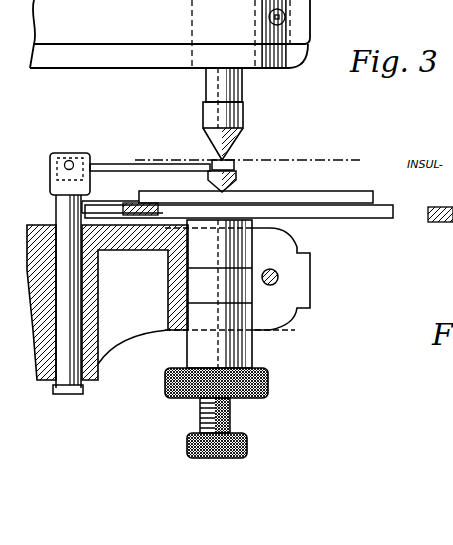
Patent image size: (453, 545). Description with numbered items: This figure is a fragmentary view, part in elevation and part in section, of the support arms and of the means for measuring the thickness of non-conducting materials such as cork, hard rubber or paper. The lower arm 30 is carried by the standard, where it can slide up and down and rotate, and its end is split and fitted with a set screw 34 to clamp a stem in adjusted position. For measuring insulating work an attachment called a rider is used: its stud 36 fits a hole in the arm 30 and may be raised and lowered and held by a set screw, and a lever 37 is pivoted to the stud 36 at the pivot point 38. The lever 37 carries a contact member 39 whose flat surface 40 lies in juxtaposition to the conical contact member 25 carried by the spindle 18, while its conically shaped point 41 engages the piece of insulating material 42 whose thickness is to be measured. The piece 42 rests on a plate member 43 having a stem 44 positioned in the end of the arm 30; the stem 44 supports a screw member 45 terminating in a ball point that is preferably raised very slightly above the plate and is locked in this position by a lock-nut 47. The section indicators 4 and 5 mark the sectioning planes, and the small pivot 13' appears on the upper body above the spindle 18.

The shaft pivot 13' is at (304, 18).
The spindle 18 is at (234, 88).
The section line 5 is at (205, 112).
The section line 4 is at (135, 160).
The conical contact member 25 is at (212, 153).
The contact member 39 is at (262, 161).
The flat surface 40 is at (230, 166).
The conically shaped point 41 is at (238, 184).
The piece of insulating material 42 is at (373, 201).
The plate member 43 is at (374, 213).
The set screw 34 is at (279, 277).
The stem 44 is at (246, 362).
The lock-nut 47 is at (268, 384).
The screw member 45 is at (231, 421).
The lower arm 30 is at (90, 357).
The stud 36 is at (80, 390).
The lever 37 is at (106, 164).
The pivot point 38 is at (69, 161).